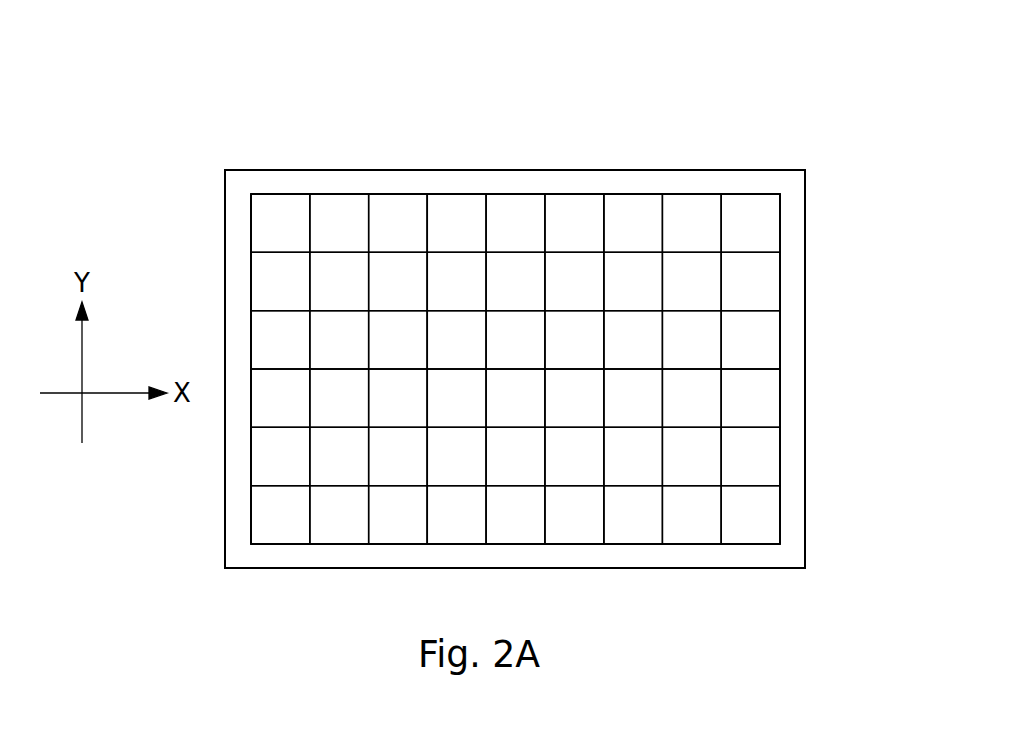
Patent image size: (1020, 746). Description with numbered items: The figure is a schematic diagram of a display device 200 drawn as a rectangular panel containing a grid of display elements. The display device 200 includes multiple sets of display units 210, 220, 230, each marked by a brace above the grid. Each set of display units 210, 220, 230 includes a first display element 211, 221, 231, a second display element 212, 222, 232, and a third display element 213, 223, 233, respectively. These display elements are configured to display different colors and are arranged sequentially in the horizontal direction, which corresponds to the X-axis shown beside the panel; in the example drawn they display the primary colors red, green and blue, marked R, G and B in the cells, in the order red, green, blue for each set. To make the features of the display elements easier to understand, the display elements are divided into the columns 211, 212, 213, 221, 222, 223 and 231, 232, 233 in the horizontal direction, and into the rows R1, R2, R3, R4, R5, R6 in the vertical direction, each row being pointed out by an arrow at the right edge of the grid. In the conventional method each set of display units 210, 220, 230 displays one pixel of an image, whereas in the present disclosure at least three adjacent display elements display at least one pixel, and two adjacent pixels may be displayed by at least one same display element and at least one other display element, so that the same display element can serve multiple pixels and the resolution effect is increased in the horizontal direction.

The display device 200 is at (38, 27).
The set of display units 210 is at (428, 111).
The first display element 211 is at (278, 201).
The second display element 212 is at (343, 201).
The third display element 213 is at (393, 201).
The set of display units 220 is at (602, 60).
The first display element 221 is at (463, 201).
The second display element 222 is at (514, 201).
The third display element 223 is at (572, 201).
The set of display units 230 is at (582, 111).
The first display element 231 is at (630, 201).
The second display element 232 is at (695, 201).
The third display element 233 is at (747, 201).
The display element row R1 is at (797, 220).
The display element row R2 is at (797, 278).
The display element row R3 is at (797, 337).
The display element row R4 is at (797, 395).
The display element row R5 is at (797, 453).
The display element row R6 is at (797, 512).